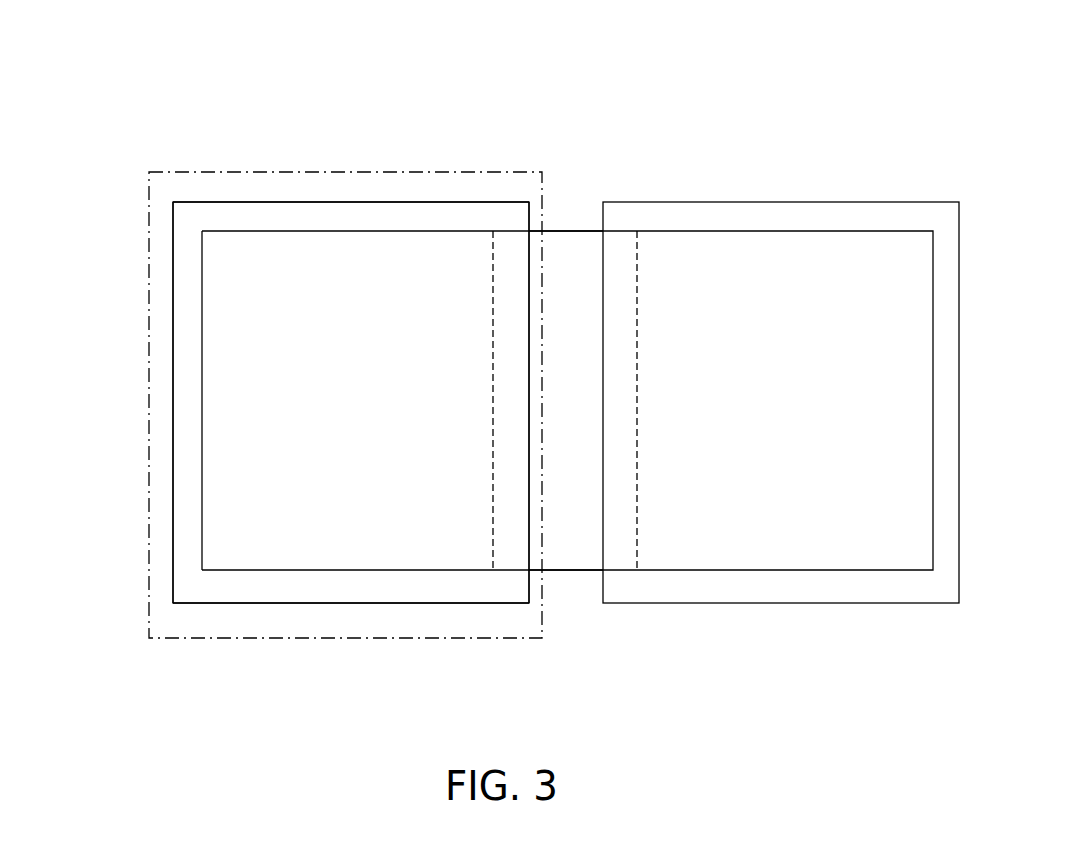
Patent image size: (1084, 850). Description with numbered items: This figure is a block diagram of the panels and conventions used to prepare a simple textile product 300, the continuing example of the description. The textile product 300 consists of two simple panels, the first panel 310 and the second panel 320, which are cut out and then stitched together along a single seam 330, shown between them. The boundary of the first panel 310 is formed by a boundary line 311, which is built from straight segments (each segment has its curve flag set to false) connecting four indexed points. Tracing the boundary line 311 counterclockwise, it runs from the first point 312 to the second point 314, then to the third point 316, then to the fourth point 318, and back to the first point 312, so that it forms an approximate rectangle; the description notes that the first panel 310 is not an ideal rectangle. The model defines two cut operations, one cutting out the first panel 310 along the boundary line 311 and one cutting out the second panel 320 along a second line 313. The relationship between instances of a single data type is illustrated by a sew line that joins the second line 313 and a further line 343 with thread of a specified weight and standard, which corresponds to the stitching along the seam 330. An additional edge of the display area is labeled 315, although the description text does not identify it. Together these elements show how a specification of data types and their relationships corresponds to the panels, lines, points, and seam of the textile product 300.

The textile product 300 is at (120, 60).
The Panel_0 310 is at (322, 605).
The Line_0 311 is at (322, 200).
The Point_0 312 is at (530, 200).
The Line_1 313 is at (491, 337).
The Point_1 314 is at (175, 200).
The left edge of display area 315 is at (200, 478).
The Point_2 316 is at (173, 606).
The Point_3 318 is at (528, 606).
The Panel_1 320 is at (780, 250).
The Seam_0 330 is at (567, 541).
The Line_4 343 is at (638, 498).